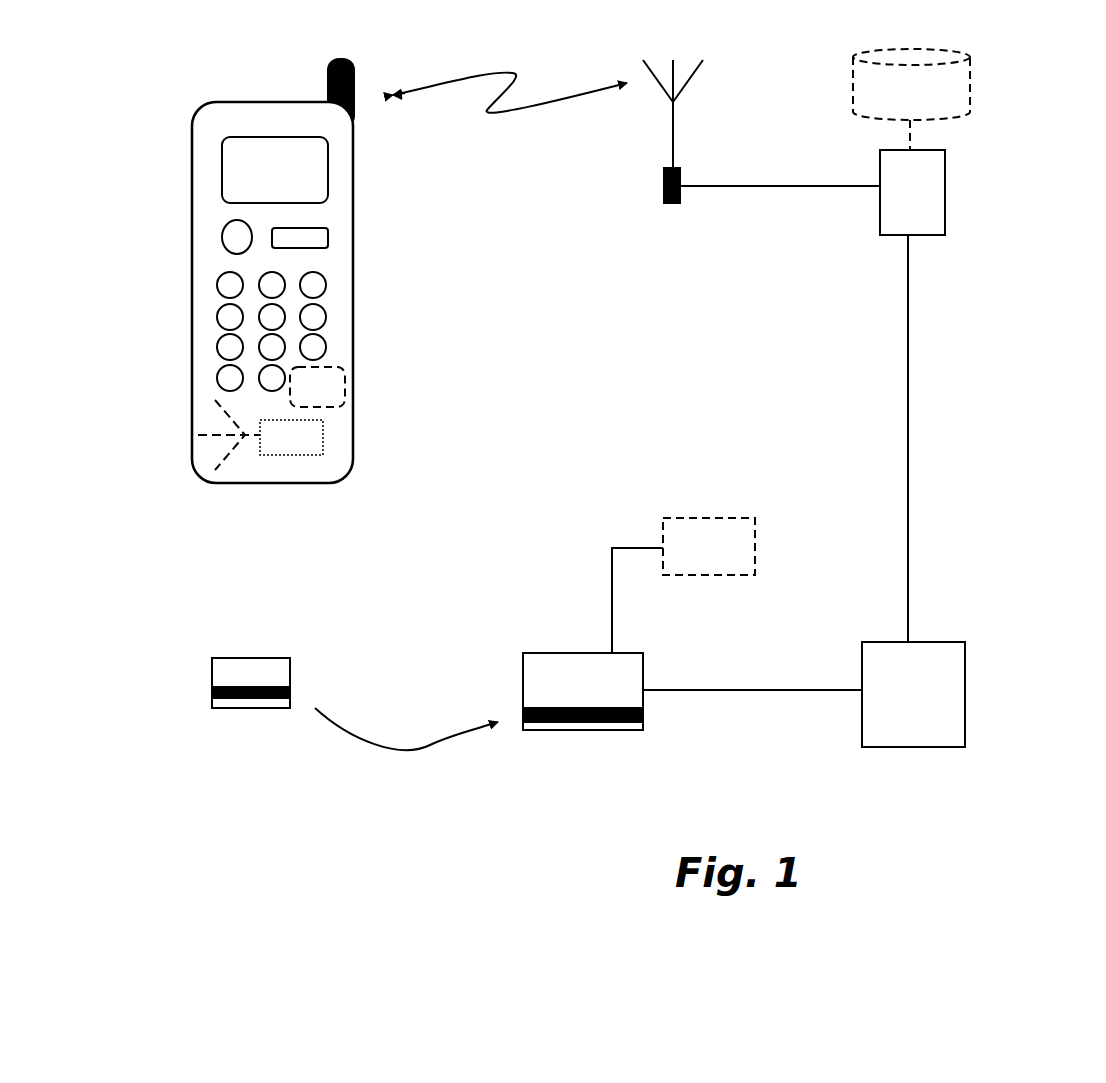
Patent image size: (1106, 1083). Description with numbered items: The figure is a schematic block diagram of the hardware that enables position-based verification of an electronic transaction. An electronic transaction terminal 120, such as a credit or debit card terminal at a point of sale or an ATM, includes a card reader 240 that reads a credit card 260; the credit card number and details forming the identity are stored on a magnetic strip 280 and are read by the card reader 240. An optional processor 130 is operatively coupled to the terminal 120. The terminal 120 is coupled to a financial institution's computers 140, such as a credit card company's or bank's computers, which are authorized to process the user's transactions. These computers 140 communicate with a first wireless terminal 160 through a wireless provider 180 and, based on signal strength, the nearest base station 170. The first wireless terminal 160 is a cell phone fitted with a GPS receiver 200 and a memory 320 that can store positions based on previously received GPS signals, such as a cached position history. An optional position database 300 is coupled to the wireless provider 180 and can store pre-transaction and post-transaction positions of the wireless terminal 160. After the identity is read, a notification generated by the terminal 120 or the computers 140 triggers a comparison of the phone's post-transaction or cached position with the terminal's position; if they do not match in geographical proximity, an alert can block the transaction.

The electronic transaction terminal 120 is at (570, 653).
The processor 130 is at (689, 562).
The financial institution's computers 140 is at (965, 690).
The first wireless terminal 160 is at (353, 182).
The base station 170 is at (668, 112).
The wireless provider 180 is at (945, 222).
The GPS receiver 200 is at (305, 455).
The card reader 240 is at (643, 715).
The credit card 260 is at (212, 670).
The magnetic strip 280 is at (212, 690).
The position database 300 is at (970, 97).
The memory 320 is at (345, 387).